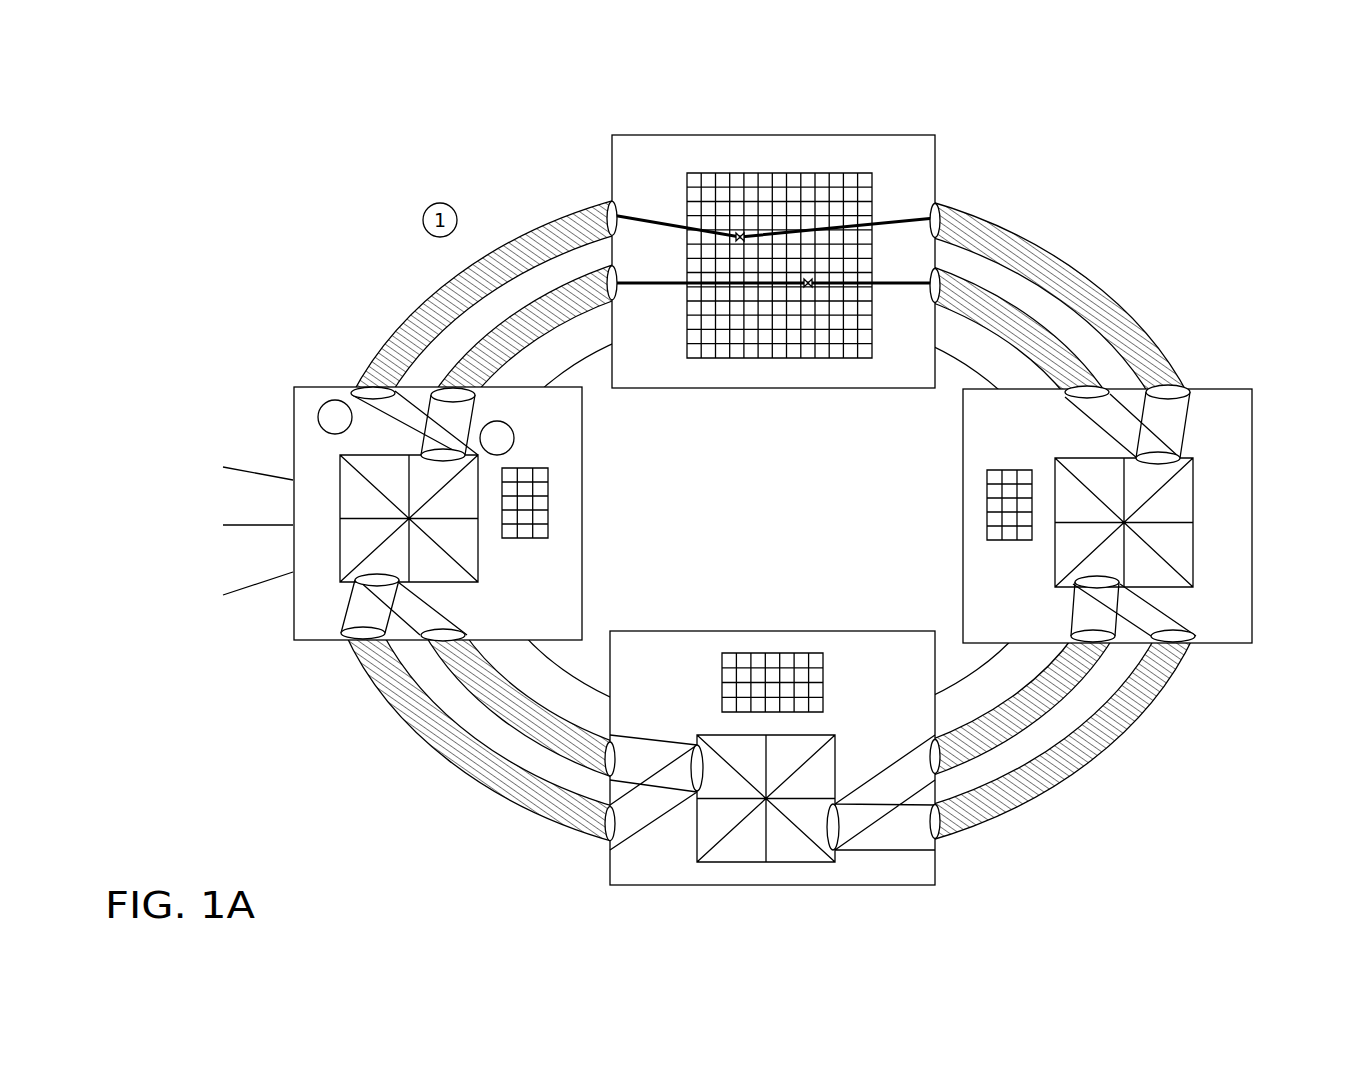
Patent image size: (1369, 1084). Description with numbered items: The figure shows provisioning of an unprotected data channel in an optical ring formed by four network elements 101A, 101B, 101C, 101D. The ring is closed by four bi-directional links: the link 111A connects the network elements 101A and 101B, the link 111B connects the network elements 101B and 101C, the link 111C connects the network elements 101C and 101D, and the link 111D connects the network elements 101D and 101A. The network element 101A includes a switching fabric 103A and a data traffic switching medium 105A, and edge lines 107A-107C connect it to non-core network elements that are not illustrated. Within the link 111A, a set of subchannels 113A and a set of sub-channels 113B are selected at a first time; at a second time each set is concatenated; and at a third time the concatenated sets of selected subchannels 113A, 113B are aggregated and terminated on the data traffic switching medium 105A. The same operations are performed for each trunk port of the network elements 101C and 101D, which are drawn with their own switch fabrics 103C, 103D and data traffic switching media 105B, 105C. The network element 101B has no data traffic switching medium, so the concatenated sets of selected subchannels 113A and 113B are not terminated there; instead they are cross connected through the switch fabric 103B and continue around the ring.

The network element 101A is at (411, 504).
The network element 101B is at (864, 275).
The network element 101C is at (1064, 443).
The network element 101D is at (711, 746).
The switching fabric 103A is at (560, 515).
The switch fabric 103B is at (780, 365).
The switch fabric 103C is at (973, 505).
The switch fabric 103D is at (708, 688).
The data traffic switching medium 105A is at (330, 457).
The data traffic switching medium 105B is at (1207, 472).
The data traffic switching medium 105C is at (825, 723).
The edge lines 107A-107C is at (235, 607).
The link 111A is at (414, 242).
The link 111B is at (1113, 273).
The link 111C is at (1195, 690).
The link 111D is at (487, 802).
The set of subchannels 113A is at (500, 310).
The set of sub-channels 113B is at (540, 217).